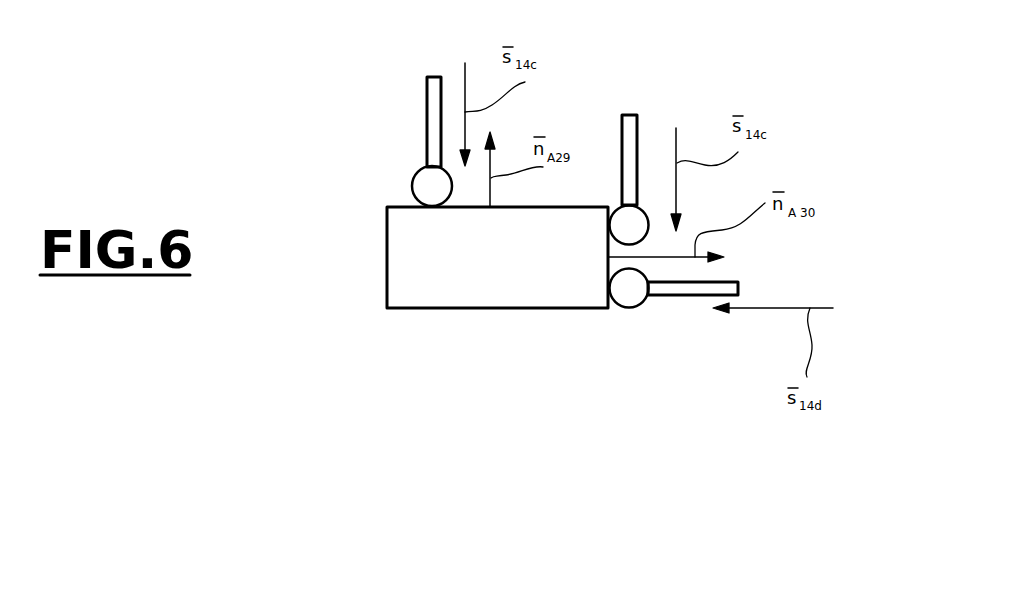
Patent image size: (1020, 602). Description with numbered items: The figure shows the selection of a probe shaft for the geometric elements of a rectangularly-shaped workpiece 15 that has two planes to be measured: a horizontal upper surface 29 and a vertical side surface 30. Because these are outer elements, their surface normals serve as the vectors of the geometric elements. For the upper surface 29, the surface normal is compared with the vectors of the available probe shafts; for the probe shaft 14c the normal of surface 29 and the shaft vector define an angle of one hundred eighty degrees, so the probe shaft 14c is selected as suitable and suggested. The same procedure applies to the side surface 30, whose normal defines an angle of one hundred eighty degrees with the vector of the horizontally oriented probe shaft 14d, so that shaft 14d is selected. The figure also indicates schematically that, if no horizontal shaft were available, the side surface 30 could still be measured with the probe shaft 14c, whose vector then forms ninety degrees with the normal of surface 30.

The workpiece 15 is at (500, 277).
The horizontal upper surface 29 is at (400, 207).
The vertical side surface 30 is at (612, 310).
The probe shaft 14c is at (427, 127).
The probe shaft 14d is at (690, 298).